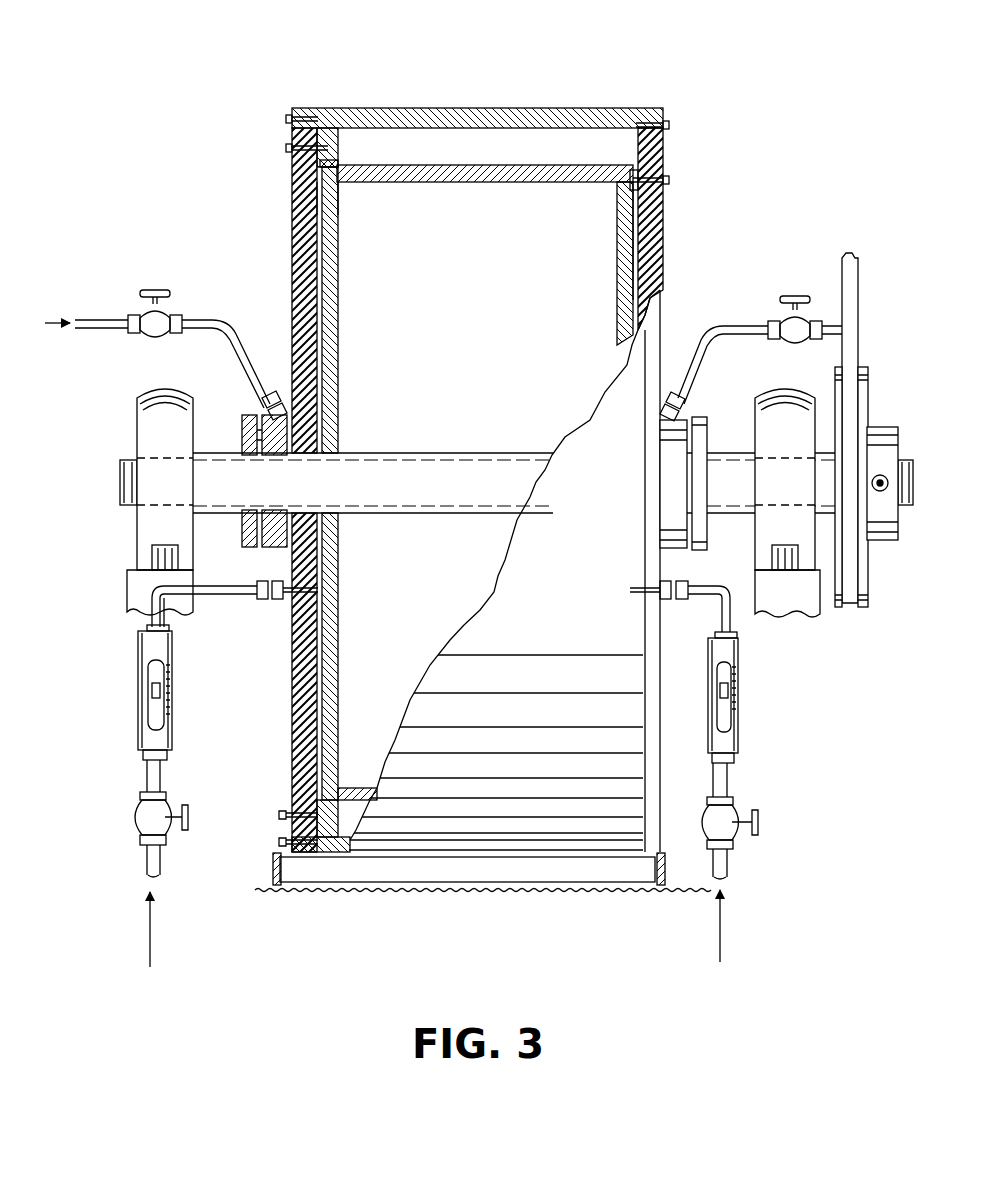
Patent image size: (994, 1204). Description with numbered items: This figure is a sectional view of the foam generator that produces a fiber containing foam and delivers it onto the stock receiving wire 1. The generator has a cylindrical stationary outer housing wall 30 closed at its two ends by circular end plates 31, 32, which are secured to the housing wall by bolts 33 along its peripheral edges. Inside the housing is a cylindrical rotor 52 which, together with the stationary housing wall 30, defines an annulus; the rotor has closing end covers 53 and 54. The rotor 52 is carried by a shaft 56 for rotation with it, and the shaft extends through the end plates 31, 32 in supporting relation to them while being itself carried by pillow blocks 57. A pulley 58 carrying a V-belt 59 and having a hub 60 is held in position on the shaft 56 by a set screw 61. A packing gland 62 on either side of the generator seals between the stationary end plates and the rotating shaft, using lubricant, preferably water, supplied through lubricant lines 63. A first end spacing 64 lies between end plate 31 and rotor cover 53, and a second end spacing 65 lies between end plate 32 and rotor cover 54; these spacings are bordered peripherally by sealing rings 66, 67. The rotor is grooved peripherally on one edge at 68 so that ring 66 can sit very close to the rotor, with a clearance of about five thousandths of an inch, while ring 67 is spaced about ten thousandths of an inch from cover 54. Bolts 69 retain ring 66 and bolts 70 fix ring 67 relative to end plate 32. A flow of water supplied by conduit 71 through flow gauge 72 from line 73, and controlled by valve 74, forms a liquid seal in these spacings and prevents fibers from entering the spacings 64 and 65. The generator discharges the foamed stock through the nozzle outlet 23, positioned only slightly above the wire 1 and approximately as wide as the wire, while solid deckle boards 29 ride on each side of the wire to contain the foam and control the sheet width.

The stock receiving foraminous support 1 is at (357, 895).
The nozzle outlet 23 is at (275, 858).
The solid deckle boards 29 is at (273, 882).
The cylindrical stationary outer housing wall 30 is at (510, 108).
The end plate 31 is at (292, 255).
The end plate 32 is at (663, 262).
The bolts 33 is at (286, 119).
The cylindrical rotor 52 is at (456, 163).
The closing end cover 53 is at (338, 368).
The closing end cover 54 is at (618, 300).
The shaft 56 is at (443, 453).
The pillow blocks 57 is at (473, 503).
The pulley 58 is at (868, 600).
The V-belt 59 is at (842, 270).
The hub 60 is at (878, 427).
The set screw 61 is at (882, 492).
The packing gland 62 is at (245, 420).
The lubricant lines 63 is at (243, 350).
The first end spacing 64 is at (338, 200).
The second end spacing 65 is at (617, 290).
The sealing ring 66 is at (340, 140).
The sealing ring 67 is at (635, 177).
The peripheral groove 68 is at (338, 167).
The bolts 69 is at (286, 148).
The bolts 70 is at (668, 180).
The conduit 71 is at (235, 595).
The flow gauge 72 is at (138, 685).
The line 73 is at (147, 853).
The valve 74 is at (142, 828).